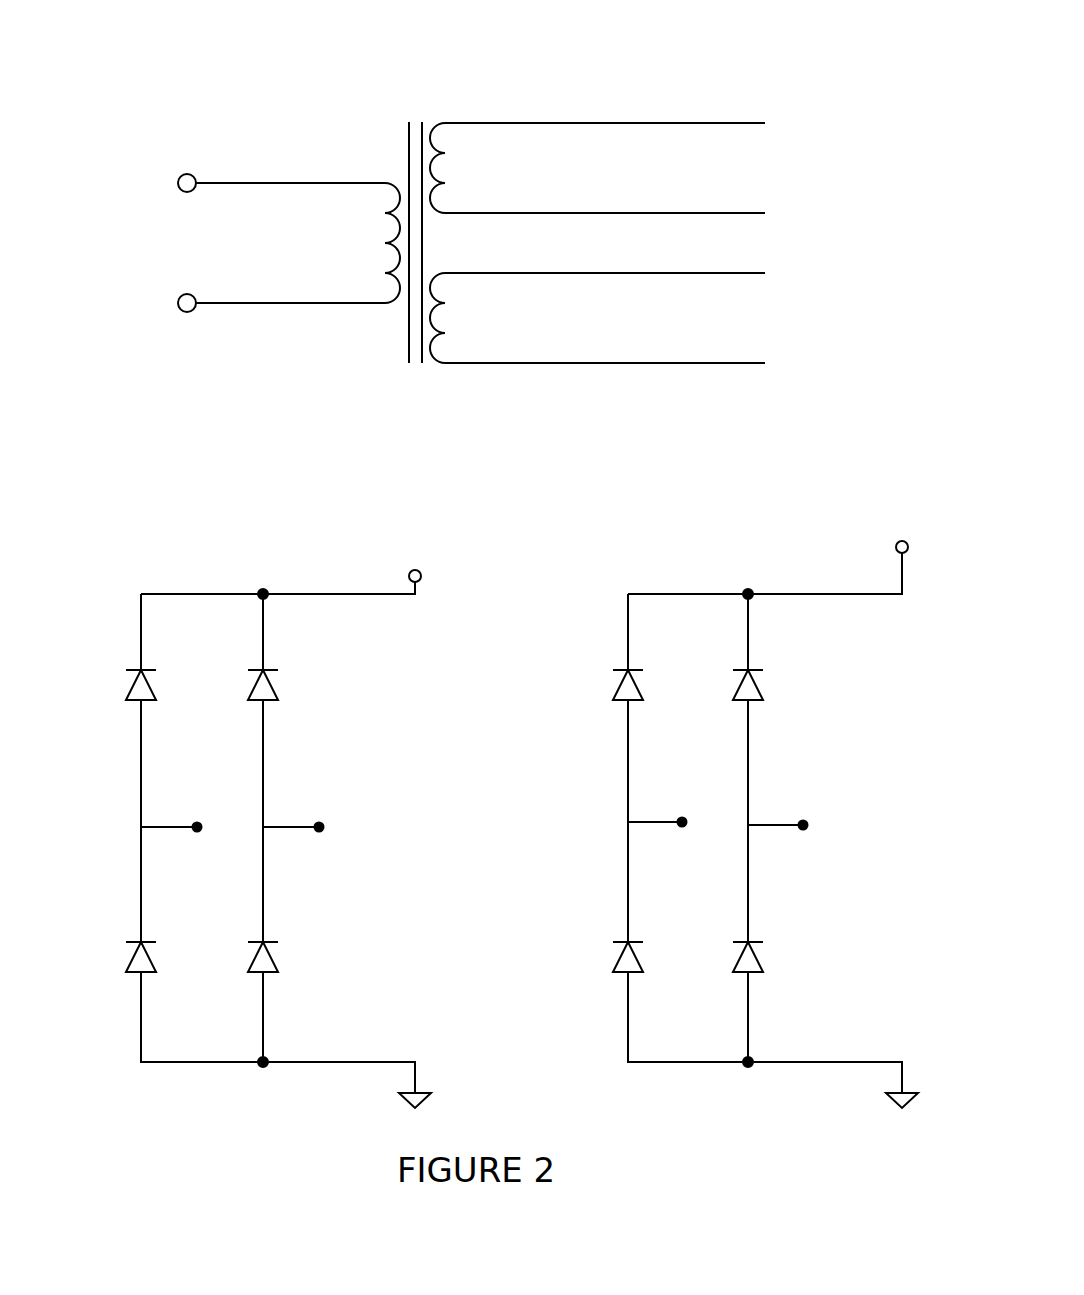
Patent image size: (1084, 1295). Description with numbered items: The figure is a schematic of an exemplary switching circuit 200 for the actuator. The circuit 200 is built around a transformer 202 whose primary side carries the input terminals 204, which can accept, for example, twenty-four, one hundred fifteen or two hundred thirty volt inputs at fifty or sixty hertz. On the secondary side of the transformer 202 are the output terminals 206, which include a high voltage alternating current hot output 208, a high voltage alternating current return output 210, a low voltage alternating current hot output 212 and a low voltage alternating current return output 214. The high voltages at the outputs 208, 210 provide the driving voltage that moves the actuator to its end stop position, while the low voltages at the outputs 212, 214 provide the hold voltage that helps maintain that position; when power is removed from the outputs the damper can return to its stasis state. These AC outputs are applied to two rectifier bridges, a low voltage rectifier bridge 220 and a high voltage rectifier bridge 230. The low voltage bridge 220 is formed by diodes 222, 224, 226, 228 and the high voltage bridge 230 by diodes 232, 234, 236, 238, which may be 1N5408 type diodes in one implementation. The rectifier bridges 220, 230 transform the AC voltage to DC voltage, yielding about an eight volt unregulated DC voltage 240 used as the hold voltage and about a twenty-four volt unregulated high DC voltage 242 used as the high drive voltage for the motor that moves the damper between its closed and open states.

The switching circuit 200 is at (252, 122).
The transformer 202 is at (462, 85).
The input terminals 204 is at (168, 252).
The output terminals 206 is at (784, 138).
The high voltage alternating current hot output 208 is at (736, 122).
The high voltage alternating current return output 210 is at (742, 213).
The low voltage alternating current hot output 212 is at (753, 273).
The low voltage alternating current return output 214 is at (755, 363).
The low voltage rectifier bridge 220 is at (226, 491).
The diode 222 is at (135, 665).
The diode 224 is at (272, 665).
The diode 226 is at (138, 937).
The diode 228 is at (272, 937).
The high voltage rectifier bridge 230 is at (712, 494).
The diode 232 is at (622, 665).
The diode 234 is at (793, 670).
The diode 236 is at (610, 942).
The diode 238 is at (775, 935).
The unregulated DC voltage 240 is at (414, 542).
The unregulated high DC voltage 242 is at (880, 507).